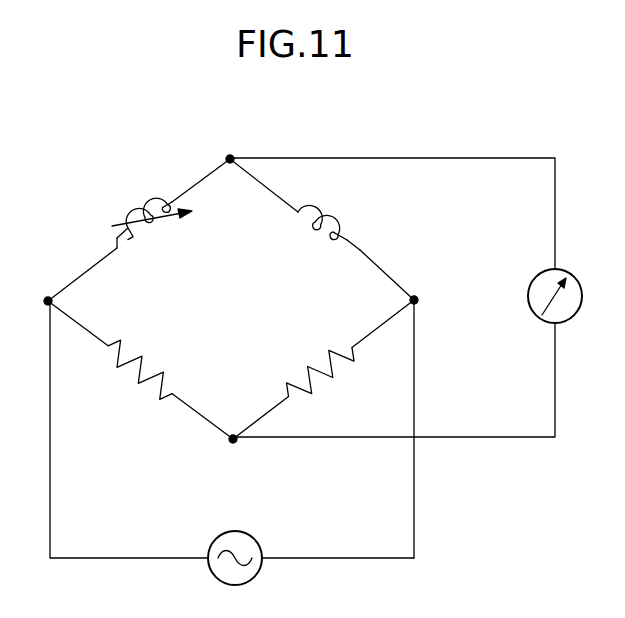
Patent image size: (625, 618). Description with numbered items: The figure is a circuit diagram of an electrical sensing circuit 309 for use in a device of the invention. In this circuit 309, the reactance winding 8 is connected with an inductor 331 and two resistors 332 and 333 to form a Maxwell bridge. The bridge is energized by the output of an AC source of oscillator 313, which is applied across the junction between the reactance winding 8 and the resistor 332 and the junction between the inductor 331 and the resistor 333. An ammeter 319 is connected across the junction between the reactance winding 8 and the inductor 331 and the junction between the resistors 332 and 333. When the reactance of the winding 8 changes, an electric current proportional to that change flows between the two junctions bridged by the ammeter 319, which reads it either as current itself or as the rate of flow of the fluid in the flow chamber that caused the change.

The reactance winding 8 is at (140, 218).
The circuit 309 is at (511, 478).
The AC source of oscillator 313 is at (258, 541).
The ammeter 319 is at (567, 273).
The inductor 331 is at (330, 222).
The resistor 332 is at (139, 380).
The resistor 333 is at (345, 364).